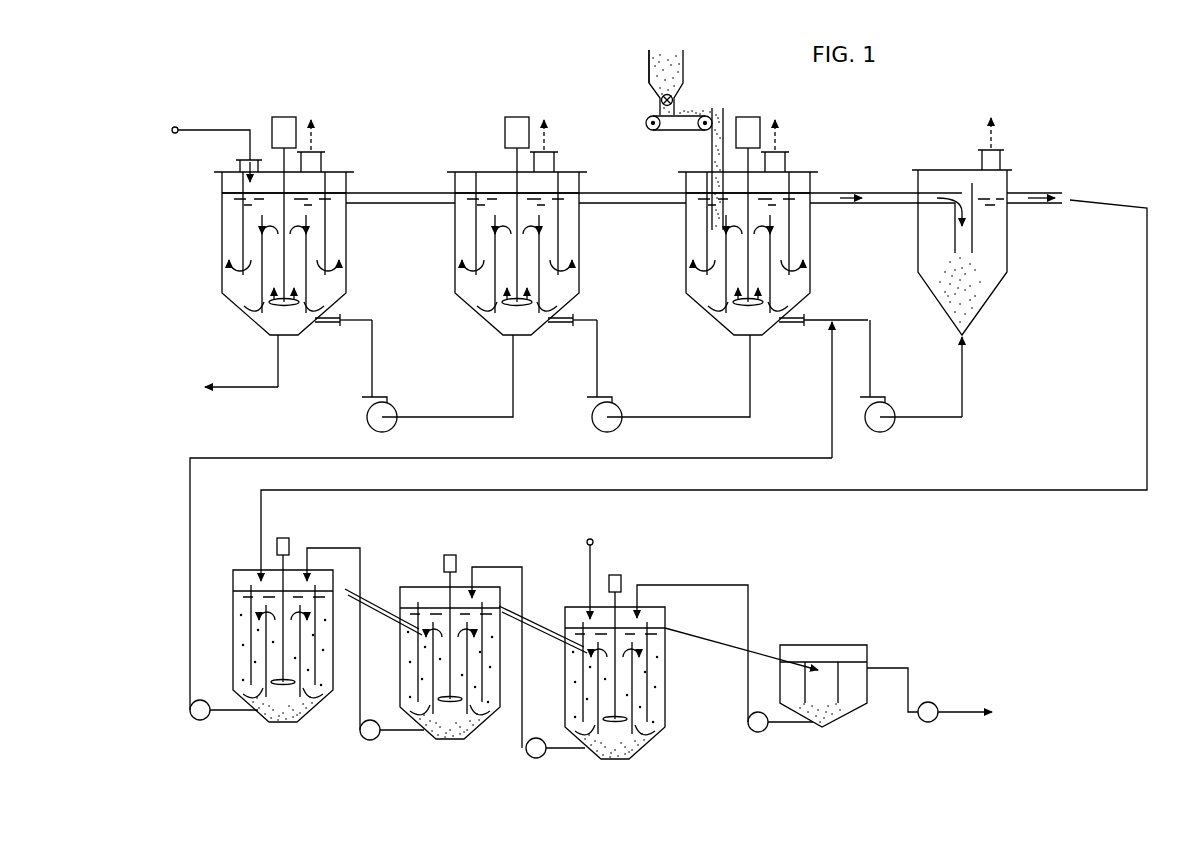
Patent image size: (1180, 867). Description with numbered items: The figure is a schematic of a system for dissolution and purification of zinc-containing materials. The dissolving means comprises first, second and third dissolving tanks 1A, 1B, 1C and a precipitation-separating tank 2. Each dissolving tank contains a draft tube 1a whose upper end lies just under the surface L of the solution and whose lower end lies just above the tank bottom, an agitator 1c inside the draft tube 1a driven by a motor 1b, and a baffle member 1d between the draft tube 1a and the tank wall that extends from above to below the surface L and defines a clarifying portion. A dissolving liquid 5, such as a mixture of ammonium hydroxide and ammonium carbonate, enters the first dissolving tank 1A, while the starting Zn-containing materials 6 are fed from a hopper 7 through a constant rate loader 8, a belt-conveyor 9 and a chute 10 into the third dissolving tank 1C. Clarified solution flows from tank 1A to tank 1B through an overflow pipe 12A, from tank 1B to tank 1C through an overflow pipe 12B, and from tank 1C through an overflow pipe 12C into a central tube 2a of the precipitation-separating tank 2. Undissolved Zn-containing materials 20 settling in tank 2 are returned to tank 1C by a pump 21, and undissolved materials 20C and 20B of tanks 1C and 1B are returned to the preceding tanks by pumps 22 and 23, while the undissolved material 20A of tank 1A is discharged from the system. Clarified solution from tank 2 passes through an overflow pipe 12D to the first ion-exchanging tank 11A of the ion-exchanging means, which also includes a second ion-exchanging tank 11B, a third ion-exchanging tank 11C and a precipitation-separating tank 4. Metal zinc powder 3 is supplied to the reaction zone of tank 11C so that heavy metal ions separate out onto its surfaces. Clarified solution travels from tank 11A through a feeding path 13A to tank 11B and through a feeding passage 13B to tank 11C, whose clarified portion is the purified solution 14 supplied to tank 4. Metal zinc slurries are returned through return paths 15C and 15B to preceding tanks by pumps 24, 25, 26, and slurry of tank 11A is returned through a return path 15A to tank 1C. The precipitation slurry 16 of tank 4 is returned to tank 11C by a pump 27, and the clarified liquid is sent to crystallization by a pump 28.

The first dissolving tank 1A is at (288, 221).
The second dissolving tank 1B is at (579, 268).
The third dissolving tank 1C is at (810, 262).
The draft tube 1a is at (263, 290).
The motor 1b is at (279, 120).
The agitator 1c is at (272, 316).
The baffle member 1d is at (326, 224).
The surface of the solution L is at (310, 192).
The precipitation-separating tank 2 is at (981, 214).
The central tube 2a is at (974, 246).
The metal zinc powder 3 is at (599, 571).
The precipitation-separating tank 4 is at (838, 721).
The dissolving liquid 5 is at (207, 150).
The Zn-containing materials 6 is at (684, 80).
The hopper 7 is at (648, 68).
The constant rate loader 8 is at (661, 100).
The belt-conveyor 9 is at (672, 131).
The chute 10 is at (712, 154).
The overflow pipe 12A is at (393, 192).
The overflow pipe 12B is at (616, 192).
The overflow pipe 12C is at (858, 192).
The overflow pipe 12D is at (1113, 207).
The feeding path 13A is at (383, 598).
The feeding passage 13B is at (544, 615).
The purified solution 14 is at (706, 640).
The return path 15A is at (248, 713).
The return path 15B is at (406, 731).
The return path 15C is at (575, 750).
The precipitation slurry 16 is at (800, 724).
The first ion-exchanging tank 11A is at (250, 633).
The second ion-exchanging tank 11B is at (478, 732).
The third ion-exchanging tank 11C is at (650, 746).
The undissolved Zn-containing materials 20 is at (963, 370).
The undissolved Zn-containing material 20A is at (280, 370).
The undissolved Zn-containing materials 20B is at (514, 370).
The undissolved Zn-containing materials 20C is at (752, 370).
The pump 21 is at (890, 404).
The pump 22 is at (617, 404).
The pump 23 is at (392, 404).
The pump 24 is at (536, 759).
The pump 25 is at (370, 741).
The pump 26 is at (200, 721).
The pump 27 is at (758, 733).
The pump 28 is at (928, 723).